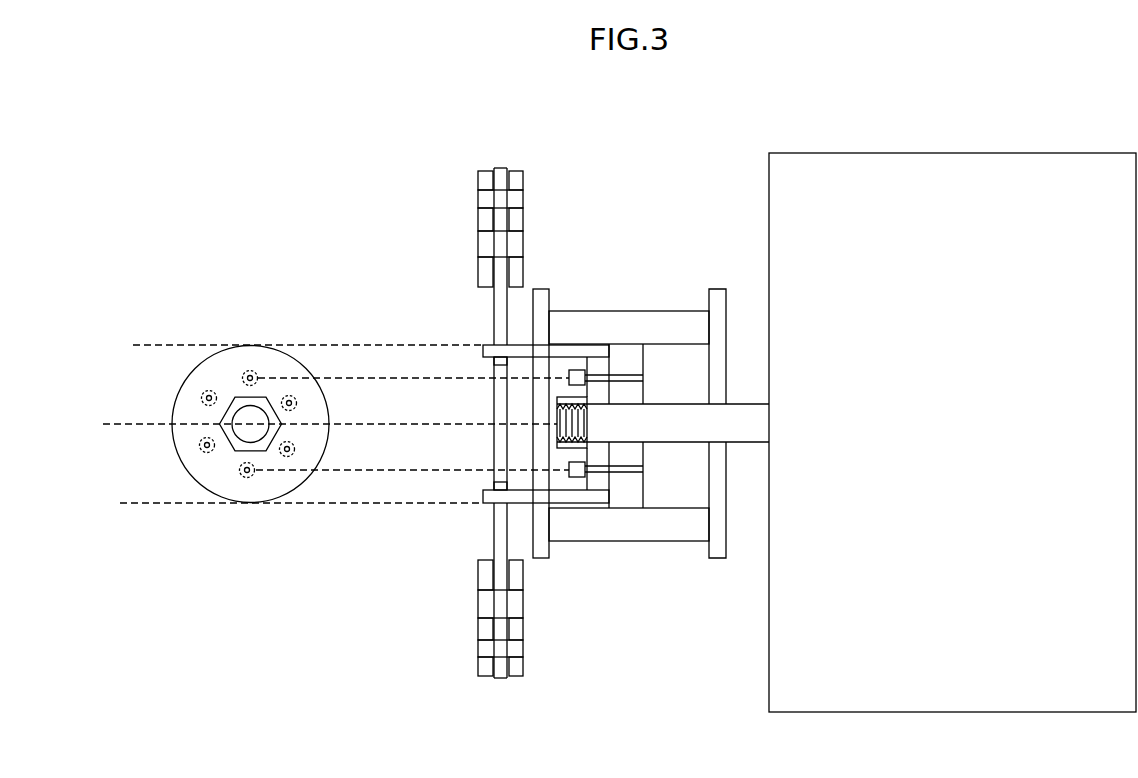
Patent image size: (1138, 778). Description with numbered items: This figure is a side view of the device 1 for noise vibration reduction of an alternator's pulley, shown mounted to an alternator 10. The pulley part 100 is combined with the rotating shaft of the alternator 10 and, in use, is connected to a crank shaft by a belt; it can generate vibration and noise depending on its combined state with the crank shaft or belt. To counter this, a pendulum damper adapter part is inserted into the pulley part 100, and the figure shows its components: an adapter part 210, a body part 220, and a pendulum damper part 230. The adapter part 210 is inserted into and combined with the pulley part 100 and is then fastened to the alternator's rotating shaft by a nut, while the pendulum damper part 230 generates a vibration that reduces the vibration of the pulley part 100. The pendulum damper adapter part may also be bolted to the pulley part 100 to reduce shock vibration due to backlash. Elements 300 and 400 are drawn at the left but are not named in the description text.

The device for noise vibration reduction of an alternator's pulley 1 is at (633, 270).
The alternator 10 is at (952, 432).
The pulley part 100 is at (599, 315).
The adapter part 210 is at (492, 349).
The body part 220 is at (498, 537).
The pendulum damper part 230 is at (518, 645).
The rotating disc 300 is at (238, 443).
The fastening bolt 400 is at (247, 368).